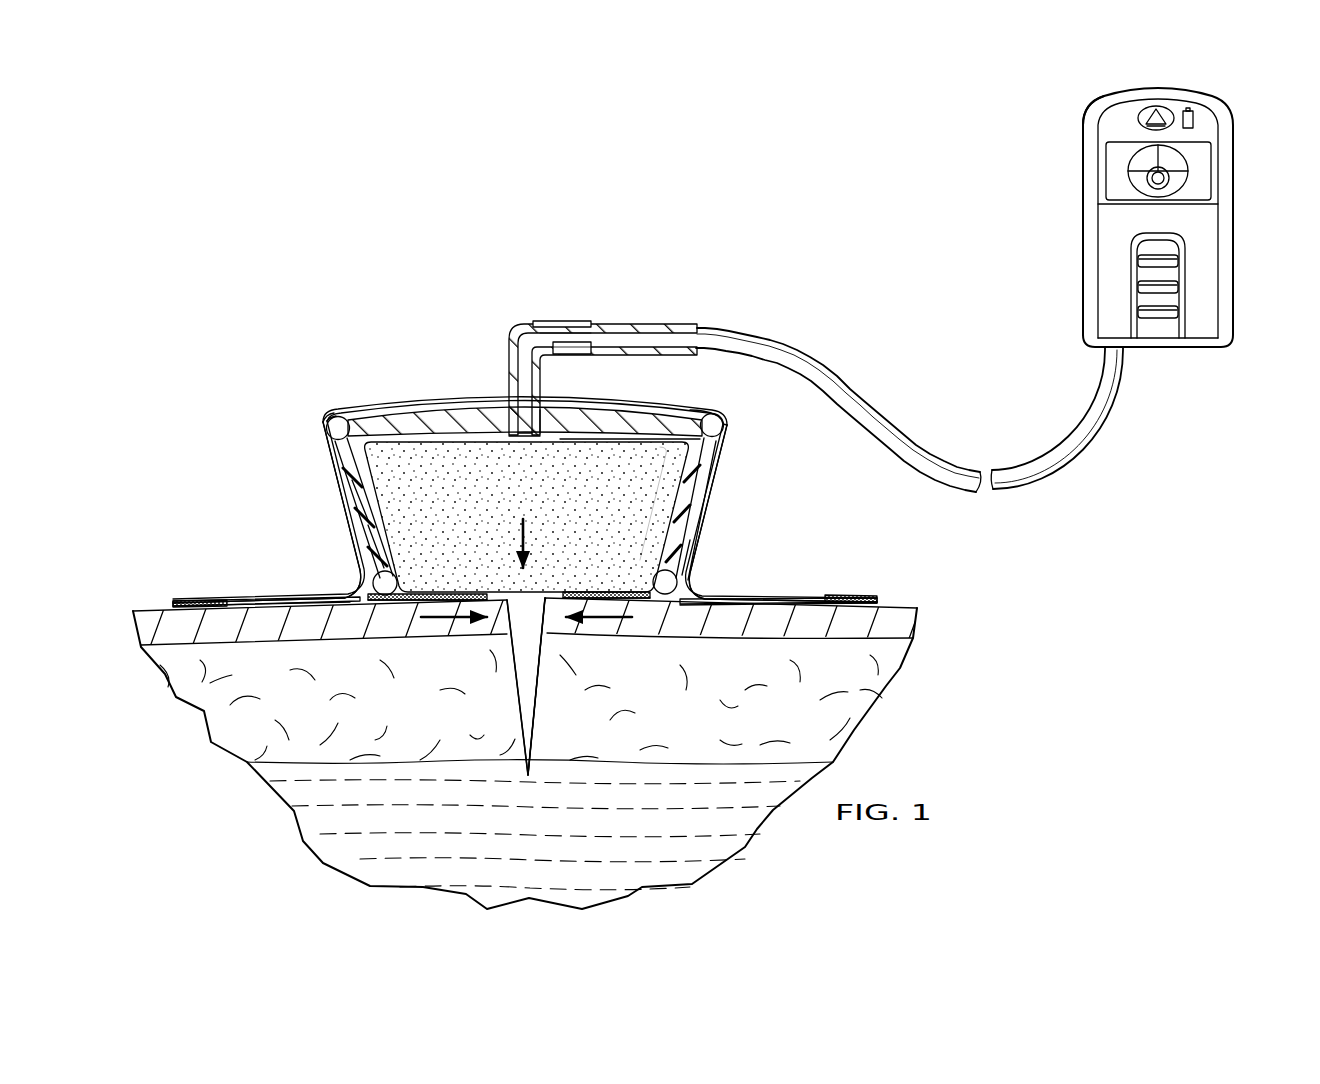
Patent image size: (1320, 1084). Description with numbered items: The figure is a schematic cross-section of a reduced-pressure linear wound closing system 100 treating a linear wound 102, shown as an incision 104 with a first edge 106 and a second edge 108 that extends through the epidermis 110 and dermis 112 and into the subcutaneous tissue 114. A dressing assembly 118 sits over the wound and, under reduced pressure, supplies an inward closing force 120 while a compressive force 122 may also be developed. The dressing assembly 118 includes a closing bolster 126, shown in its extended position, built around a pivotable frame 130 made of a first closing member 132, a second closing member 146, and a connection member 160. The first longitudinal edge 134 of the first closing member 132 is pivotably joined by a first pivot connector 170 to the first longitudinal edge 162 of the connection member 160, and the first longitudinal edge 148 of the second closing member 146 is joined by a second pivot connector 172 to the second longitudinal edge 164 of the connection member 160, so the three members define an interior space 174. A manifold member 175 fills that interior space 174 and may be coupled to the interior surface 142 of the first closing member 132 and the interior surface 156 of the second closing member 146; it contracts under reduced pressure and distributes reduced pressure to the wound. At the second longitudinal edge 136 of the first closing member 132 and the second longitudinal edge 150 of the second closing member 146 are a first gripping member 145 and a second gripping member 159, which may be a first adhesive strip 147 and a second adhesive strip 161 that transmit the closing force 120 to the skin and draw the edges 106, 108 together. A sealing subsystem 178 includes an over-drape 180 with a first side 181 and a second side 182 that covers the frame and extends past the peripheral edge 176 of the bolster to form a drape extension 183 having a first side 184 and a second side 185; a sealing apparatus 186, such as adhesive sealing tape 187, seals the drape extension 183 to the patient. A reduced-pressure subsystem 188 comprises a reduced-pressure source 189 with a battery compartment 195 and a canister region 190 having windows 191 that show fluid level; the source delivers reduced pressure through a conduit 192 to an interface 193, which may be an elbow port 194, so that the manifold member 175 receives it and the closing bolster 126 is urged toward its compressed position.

The reduced-pressure linear wound closing system 100 is at (358, 215).
The linear wound 102 is at (512, 688).
The incision 104 is at (540, 690).
The first edge 106 is at (514, 724).
The second edge 108 is at (541, 724).
The epidermis 110 is at (915, 630).
The dermis 112 is at (774, 707).
The subcutaneous tissue 114 is at (706, 818).
The dressing assembly 118 is at (333, 352).
The closing force 120 is at (430, 626).
The compressive force 122 is at (515, 528).
The closing bolster 126 is at (397, 418).
The pivotable frame 130 is at (716, 470).
The first closing member 132 is at (346, 465).
The first longitudinal edge 134 is at (340, 452).
The second longitudinal edge 136 is at (380, 568).
The interior surface 142 is at (368, 522).
The first gripping member 145 is at (432, 592).
The second closing member 146 is at (702, 486).
The first adhesive strip 147 is at (377, 601).
The first longitudinal edge 148 is at (722, 453).
The second longitudinal edge 150 is at (682, 562).
The interior surface 156 is at (690, 526).
The second gripping member 159 is at (610, 592).
The connection member 160 is at (415, 418).
The second adhesive strip 161 is at (668, 600).
The first longitudinal edge 162 is at (338, 416).
The second longitudinal edge 164 is at (700, 416).
The first pivot connector 170 is at (330, 418).
The second pivot connector 172 is at (722, 424).
The interior space 174 is at (662, 442).
The manifold member 175 is at (511, 483).
The peripheral edge 176 is at (370, 590).
The sealing subsystem 178 is at (327, 495).
The over-drape 180 is at (327, 425).
The first side 181 is at (650, 414).
The second side 182 is at (622, 434).
The drape extension 183 is at (797, 597).
The first side 184 is at (240, 600).
The second side 185 is at (262, 640).
The sealing apparatus 186 is at (880, 602).
The adhesive sealing tape 187 is at (195, 600).
The reduced-pressure subsystem 188 is at (985, 190).
The reduced-pressure source 189 is at (1083, 140).
The canister region 190 is at (1185, 238).
The windows 191 is at (1143, 262).
The conduit 192 is at (685, 323).
The interface 193 is at (509, 400).
The elbow port 194 is at (565, 321).
The battery compartment 195 is at (1110, 158).